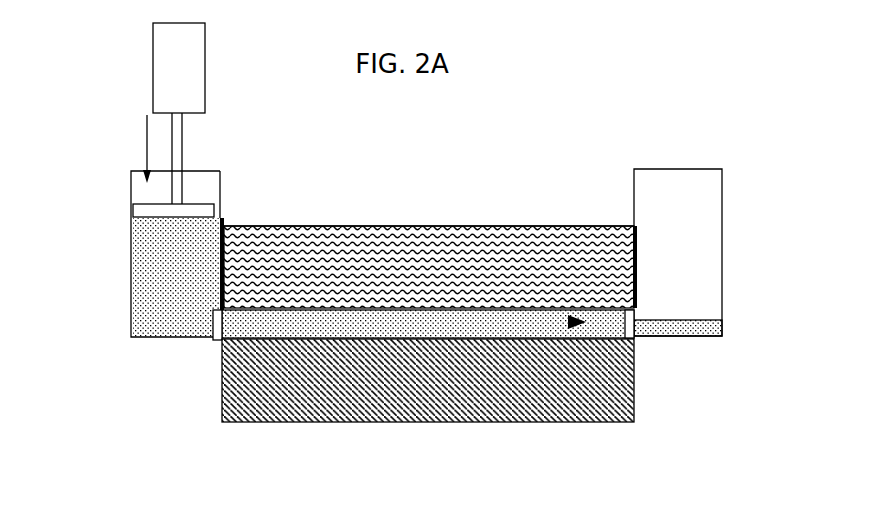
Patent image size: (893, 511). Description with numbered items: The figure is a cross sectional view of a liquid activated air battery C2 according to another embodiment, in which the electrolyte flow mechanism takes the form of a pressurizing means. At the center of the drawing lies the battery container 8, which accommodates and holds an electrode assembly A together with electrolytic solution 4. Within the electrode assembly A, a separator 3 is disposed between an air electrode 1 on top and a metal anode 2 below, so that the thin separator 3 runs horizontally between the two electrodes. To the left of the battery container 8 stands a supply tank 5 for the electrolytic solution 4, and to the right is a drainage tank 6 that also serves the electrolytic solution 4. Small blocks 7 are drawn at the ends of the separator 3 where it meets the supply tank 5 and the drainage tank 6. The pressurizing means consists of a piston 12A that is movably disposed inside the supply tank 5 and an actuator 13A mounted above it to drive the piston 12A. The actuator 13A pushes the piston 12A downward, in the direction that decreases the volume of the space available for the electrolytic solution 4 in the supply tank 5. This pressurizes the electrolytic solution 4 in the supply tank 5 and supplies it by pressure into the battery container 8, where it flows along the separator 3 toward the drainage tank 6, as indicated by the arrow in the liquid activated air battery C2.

The actuator 13A is at (165, 83).
The piston 12A is at (137, 215).
The supply tank 5 is at (127, 244).
The electrolytic solution 4 is at (163, 318).
The battery container 8 is at (223, 222).
The air electrode 1 is at (302, 240).
The electrode assembly A is at (391, 222).
The separator 3 is at (525, 336).
The gate block 7 is at (213, 341).
The metal anode 2 is at (305, 410).
The drainage tank 6 is at (699, 185).
The liquid activated air battery C2 is at (564, 186).